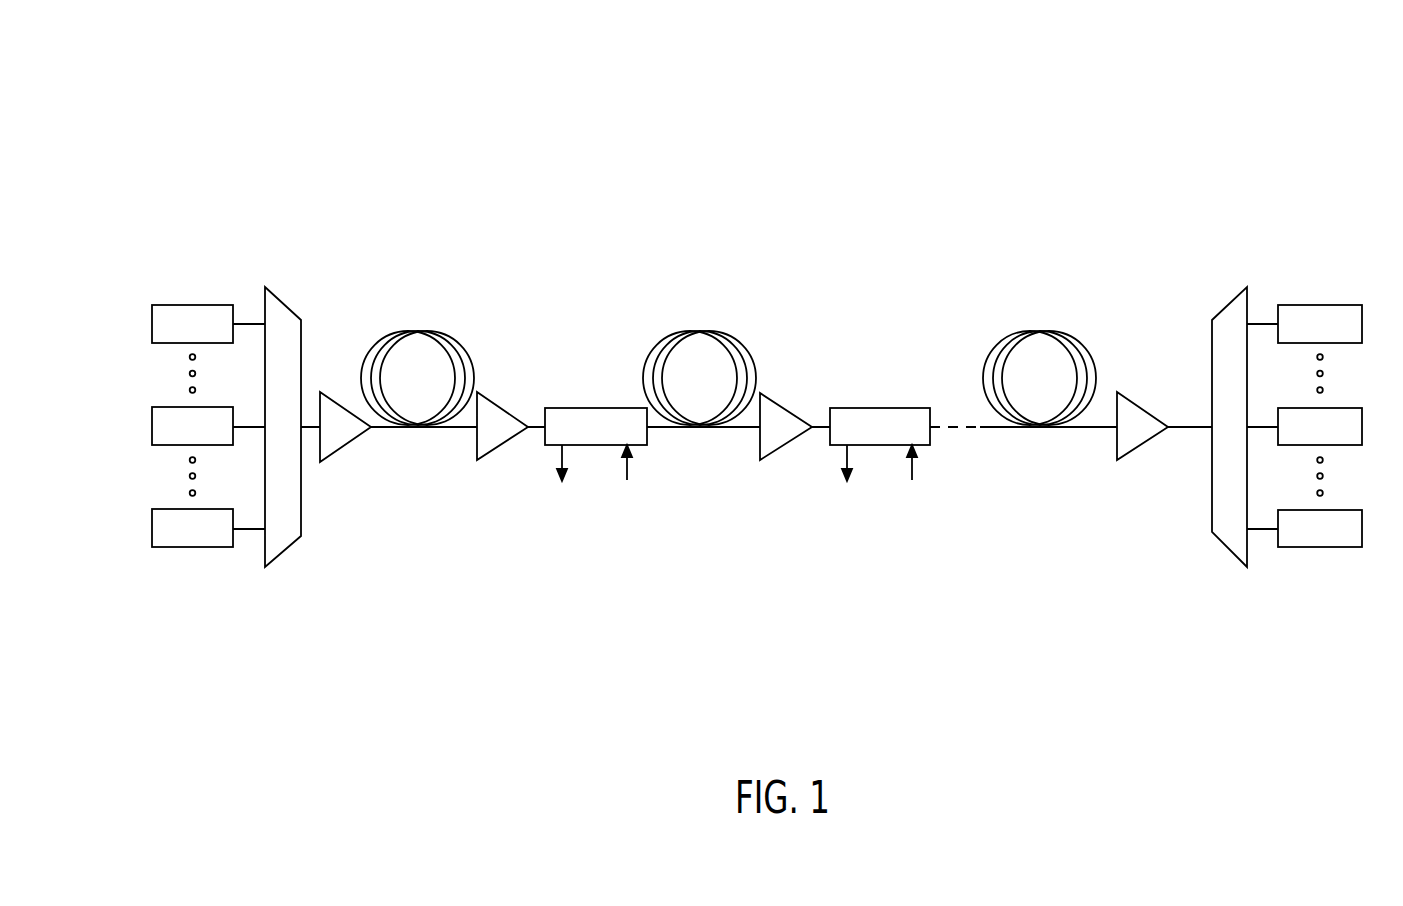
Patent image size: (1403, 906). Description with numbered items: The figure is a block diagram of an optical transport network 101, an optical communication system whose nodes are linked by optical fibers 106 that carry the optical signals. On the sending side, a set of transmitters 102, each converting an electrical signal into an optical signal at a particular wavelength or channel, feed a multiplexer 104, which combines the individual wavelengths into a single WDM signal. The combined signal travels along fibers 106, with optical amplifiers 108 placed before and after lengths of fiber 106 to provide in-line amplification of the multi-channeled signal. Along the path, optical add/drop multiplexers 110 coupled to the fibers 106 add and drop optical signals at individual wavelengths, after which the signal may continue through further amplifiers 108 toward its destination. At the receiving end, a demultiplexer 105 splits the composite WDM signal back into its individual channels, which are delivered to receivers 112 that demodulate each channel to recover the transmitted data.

The optical transport network 101 is at (240, 52).
The transmitter 102 is at (178, 305).
The multiplexer 104 is at (281, 293).
The demultiplexer 105 is at (1233, 293).
The optical fiber 106 is at (410, 330).
The optical amplifier 108 is at (340, 447).
The optical add/drop multiplexer 110 is at (582, 408).
The receiver 112 is at (1335, 305).